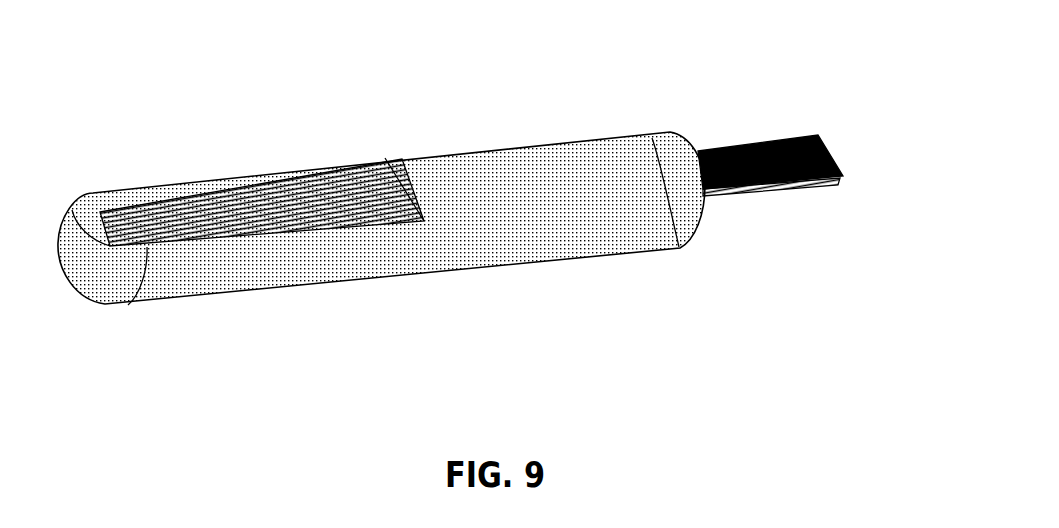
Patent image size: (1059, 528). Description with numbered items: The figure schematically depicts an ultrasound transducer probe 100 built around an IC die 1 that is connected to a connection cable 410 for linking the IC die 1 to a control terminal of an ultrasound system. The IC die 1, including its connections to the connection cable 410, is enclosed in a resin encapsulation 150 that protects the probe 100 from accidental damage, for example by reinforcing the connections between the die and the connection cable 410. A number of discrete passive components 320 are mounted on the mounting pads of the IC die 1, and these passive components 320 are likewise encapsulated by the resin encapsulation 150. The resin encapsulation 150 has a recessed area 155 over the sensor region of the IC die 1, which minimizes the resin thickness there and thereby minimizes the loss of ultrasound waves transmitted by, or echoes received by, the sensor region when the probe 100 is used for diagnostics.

The ultrasound transducer probe 100 is at (522, 398).
The IC die 1 is at (675, 217).
The resin encapsulation 150 is at (658, 145).
The recessed area 155 is at (260, 217).
The discrete passive components 320 is at (513, 185).
The connection cable 410 is at (817, 156).